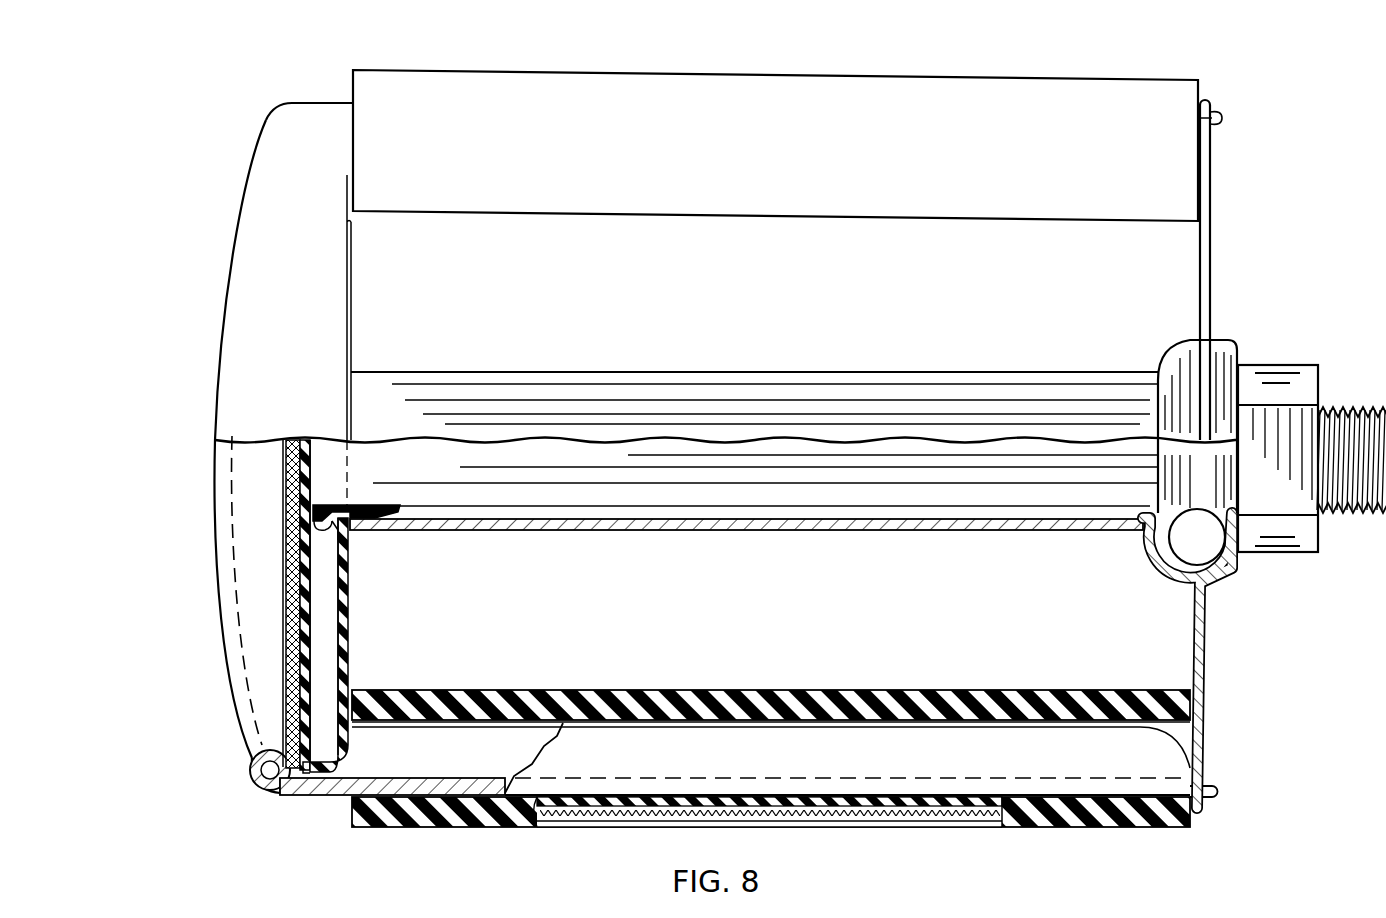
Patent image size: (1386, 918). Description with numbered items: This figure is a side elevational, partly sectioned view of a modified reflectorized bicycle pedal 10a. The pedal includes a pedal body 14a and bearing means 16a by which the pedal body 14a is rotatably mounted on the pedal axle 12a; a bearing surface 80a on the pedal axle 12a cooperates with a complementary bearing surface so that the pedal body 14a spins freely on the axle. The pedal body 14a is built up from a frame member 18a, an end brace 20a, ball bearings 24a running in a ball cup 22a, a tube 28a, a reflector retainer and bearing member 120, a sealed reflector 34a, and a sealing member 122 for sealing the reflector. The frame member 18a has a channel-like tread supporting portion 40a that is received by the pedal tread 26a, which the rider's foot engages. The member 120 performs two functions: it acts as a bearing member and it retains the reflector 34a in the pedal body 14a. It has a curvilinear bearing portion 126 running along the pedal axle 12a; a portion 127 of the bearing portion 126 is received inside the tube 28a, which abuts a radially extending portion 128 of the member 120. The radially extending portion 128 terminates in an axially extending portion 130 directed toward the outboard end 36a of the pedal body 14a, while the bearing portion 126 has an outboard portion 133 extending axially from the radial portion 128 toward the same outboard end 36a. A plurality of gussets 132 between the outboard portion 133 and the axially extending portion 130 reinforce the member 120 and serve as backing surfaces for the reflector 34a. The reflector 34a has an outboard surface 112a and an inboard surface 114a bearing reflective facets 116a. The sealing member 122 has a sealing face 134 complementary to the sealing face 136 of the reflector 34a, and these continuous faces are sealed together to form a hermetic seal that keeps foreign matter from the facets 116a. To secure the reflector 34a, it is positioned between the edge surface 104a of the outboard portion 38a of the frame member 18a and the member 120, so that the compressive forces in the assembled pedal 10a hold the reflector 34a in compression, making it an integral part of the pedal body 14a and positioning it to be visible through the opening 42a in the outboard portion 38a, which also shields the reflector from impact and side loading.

The reflectorized bicycle pedal 10a is at (1272, 160).
The pedal axle 12a is at (1283, 553).
The pedal body 14a is at (1240, 83).
The bearing means 16a is at (1185, 500).
The frame member 18a is at (293, 103).
The end brace 20a is at (1212, 263).
The ball cup 22a is at (1166, 558).
The ball bearings 24a is at (1183, 539).
The pedal tread 26a is at (490, 829).
The tube 28a is at (915, 531).
The sealed reflector 34a is at (295, 645).
The outboard end 36a is at (233, 747).
The outboard portion 38a is at (248, 163).
The tread supporting portion 40a is at (1090, 763).
The opening 42a is at (266, 750).
The bearing surface 80a is at (368, 475).
The edge surface 104a is at (266, 774).
The outboard surface 112a is at (290, 600).
The inboard surface 114a is at (285, 683).
The reflective facets 116a is at (286, 722).
The reflector retainer and bearing member 120 is at (349, 598).
The sealing member 122 is at (306, 626).
The curvilinear bearing portion 126 is at (345, 505).
The portion 127 is at (326, 524).
The radially extending portion 128 is at (350, 522).
The axially extending portion 130 is at (305, 790).
The gussets 132 is at (340, 672).
The outboard portion 133 is at (334, 532).
The sealing face 134 is at (290, 766).
The sealing face 136 is at (287, 778).